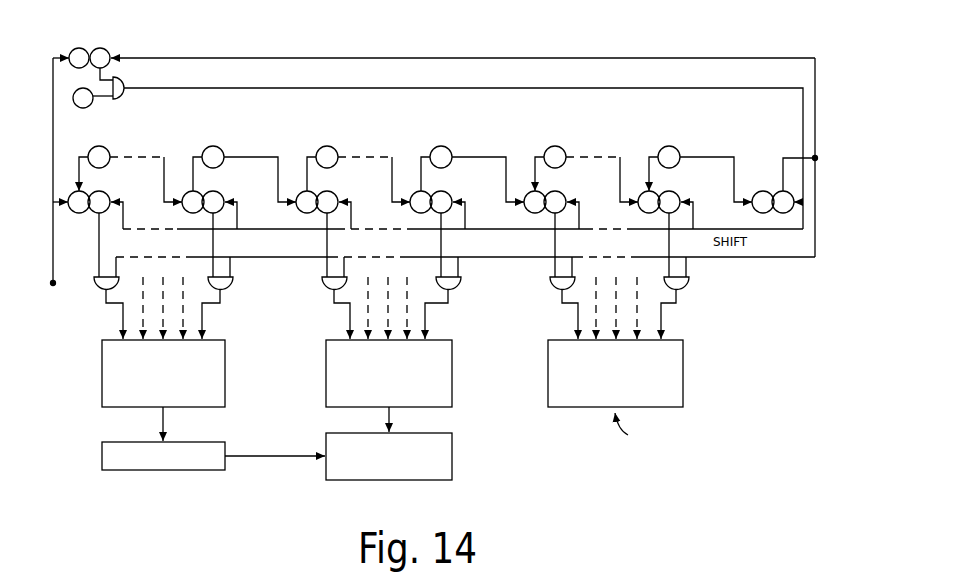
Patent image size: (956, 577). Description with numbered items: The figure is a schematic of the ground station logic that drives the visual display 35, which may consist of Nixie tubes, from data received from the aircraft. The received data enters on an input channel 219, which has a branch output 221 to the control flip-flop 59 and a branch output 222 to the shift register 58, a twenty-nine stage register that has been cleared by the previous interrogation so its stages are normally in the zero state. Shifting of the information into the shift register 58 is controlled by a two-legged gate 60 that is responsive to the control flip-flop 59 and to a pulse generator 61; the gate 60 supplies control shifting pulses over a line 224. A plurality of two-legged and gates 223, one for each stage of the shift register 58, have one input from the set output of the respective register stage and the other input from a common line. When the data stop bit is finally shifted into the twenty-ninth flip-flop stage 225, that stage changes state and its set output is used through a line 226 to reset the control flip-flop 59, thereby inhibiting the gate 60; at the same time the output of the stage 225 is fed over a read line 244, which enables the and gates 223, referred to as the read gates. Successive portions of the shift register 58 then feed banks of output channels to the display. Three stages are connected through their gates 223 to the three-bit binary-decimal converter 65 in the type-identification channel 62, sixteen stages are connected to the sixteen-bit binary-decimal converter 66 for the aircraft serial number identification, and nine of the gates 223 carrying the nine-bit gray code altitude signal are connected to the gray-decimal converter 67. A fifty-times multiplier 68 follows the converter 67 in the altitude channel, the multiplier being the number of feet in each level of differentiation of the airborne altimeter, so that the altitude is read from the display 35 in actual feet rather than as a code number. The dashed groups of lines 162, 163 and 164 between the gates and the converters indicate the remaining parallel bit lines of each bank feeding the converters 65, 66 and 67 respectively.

The visual display 35 is at (420, 480).
The shift register 58 is at (360, 146).
The control flip-flop 59 is at (105, 48).
The gate 60 is at (127, 95).
The pulse generator 61 is at (91, 106).
The bank of output channels 62 is at (653, 442).
The binary-decimal code converter 65 is at (683, 376).
The binary-decimal code converter 66 is at (452, 378).
The gray-decimal code converter 67 is at (225, 378).
The fifty-times multiplier 68 is at (220, 470).
The converter input lines 162 is at (616, 308).
The converter input lines 163 is at (387, 308).
The converter input lines 164 is at (163, 308).
The input channel 219 is at (53, 248).
The branch output 221 is at (53, 140).
The branch output 222 is at (68, 210).
The and gates 223 is at (100, 290).
The line 224 is at (442, 88).
The 29th flip-flop stage 225 is at (762, 190).
The line 226 is at (510, 57).
The read line 244 is at (816, 258).